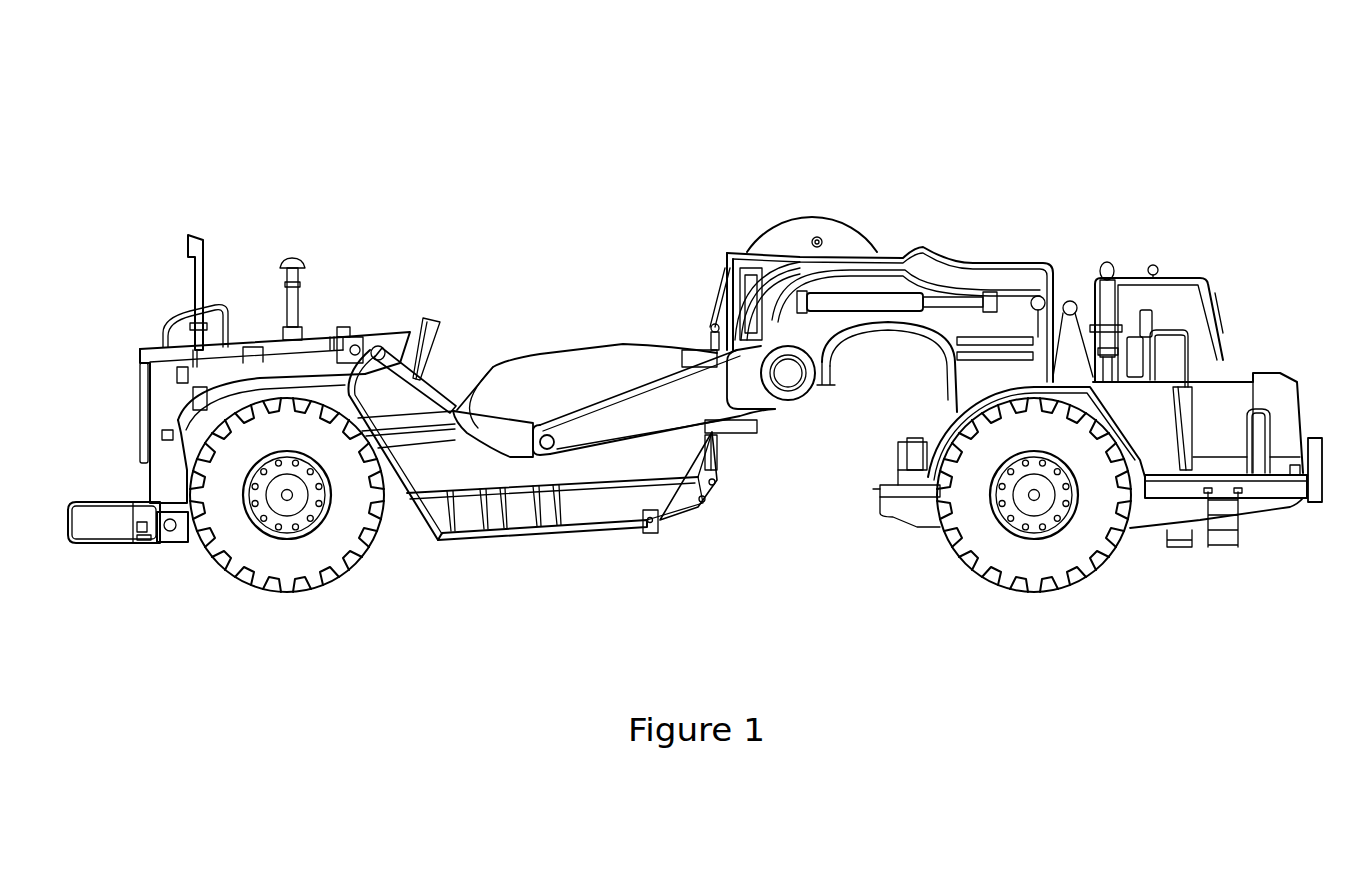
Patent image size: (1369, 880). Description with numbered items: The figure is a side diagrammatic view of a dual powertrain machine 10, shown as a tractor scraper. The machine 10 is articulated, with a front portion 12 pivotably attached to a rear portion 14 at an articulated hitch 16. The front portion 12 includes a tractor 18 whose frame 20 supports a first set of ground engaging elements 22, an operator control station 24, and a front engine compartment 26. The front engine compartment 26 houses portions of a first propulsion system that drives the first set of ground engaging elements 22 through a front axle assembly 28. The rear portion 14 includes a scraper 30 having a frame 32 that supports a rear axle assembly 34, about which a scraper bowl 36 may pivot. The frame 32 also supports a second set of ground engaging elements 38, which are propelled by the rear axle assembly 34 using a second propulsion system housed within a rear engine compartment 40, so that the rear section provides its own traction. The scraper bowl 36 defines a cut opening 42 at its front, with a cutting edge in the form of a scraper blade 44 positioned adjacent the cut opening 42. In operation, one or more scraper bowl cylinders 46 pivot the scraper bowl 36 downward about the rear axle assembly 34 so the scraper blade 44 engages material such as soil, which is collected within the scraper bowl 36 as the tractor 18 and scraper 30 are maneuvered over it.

The machine 10 is at (1076, 146).
The front portion 12 is at (1262, 274).
The rear portion 14 is at (353, 280).
The articulated hitch 16 is at (927, 215).
The tractor 18 is at (1300, 400).
The frame 20 is at (1297, 500).
The first set of ground engaging elements 22 is at (1078, 565).
The operator control station 24 is at (1180, 277).
The front engine compartment 26 is at (1143, 398).
The front axle assembly 28 is at (1042, 497).
The scraper 30 is at (463, 457).
The frame 32 is at (591, 502).
The rear axle assembly 34 is at (294, 497).
The scraper bowl 36 is at (480, 427).
The second set of ground engaging elements 38 is at (331, 560).
The rear engine compartment 40 is at (230, 372).
The cut opening 42 is at (694, 509).
The scraper blade 44 is at (657, 518).
The scraper bowl cylinders 46 is at (853, 298).